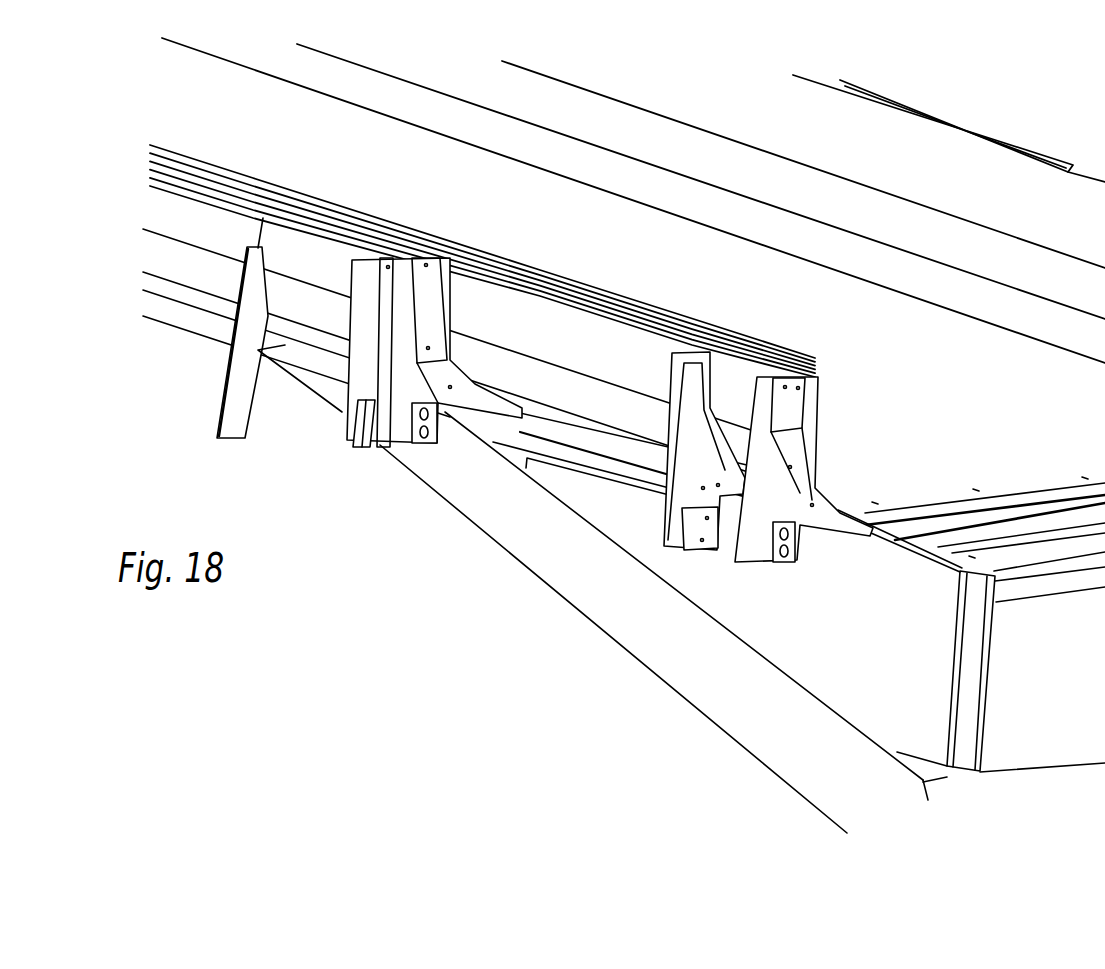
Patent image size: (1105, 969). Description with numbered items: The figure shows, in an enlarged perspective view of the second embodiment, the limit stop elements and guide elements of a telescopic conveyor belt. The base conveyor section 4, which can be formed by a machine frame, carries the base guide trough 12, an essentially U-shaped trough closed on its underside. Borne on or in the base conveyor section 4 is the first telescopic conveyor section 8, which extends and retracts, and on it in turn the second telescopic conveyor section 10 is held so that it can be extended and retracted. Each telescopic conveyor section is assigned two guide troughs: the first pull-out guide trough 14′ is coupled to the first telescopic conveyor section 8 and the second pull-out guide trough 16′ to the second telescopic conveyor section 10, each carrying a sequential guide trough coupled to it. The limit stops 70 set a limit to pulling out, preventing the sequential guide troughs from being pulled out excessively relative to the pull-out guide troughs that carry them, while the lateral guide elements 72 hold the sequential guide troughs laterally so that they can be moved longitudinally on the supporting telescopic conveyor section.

The base conveyor section 4 is at (450, 584).
The first telescopic conveyor section 8 is at (630, 617).
The second telescopic conveyor section 10 is at (870, 713).
The base guide trough 12 is at (198, 227).
The first pull-out guide trough 14′ is at (423, 282).
The second pull-out guide trough 16′ is at (810, 387).
The limit stop 70 is at (350, 413).
The lateral guide element 72 is at (355, 413).